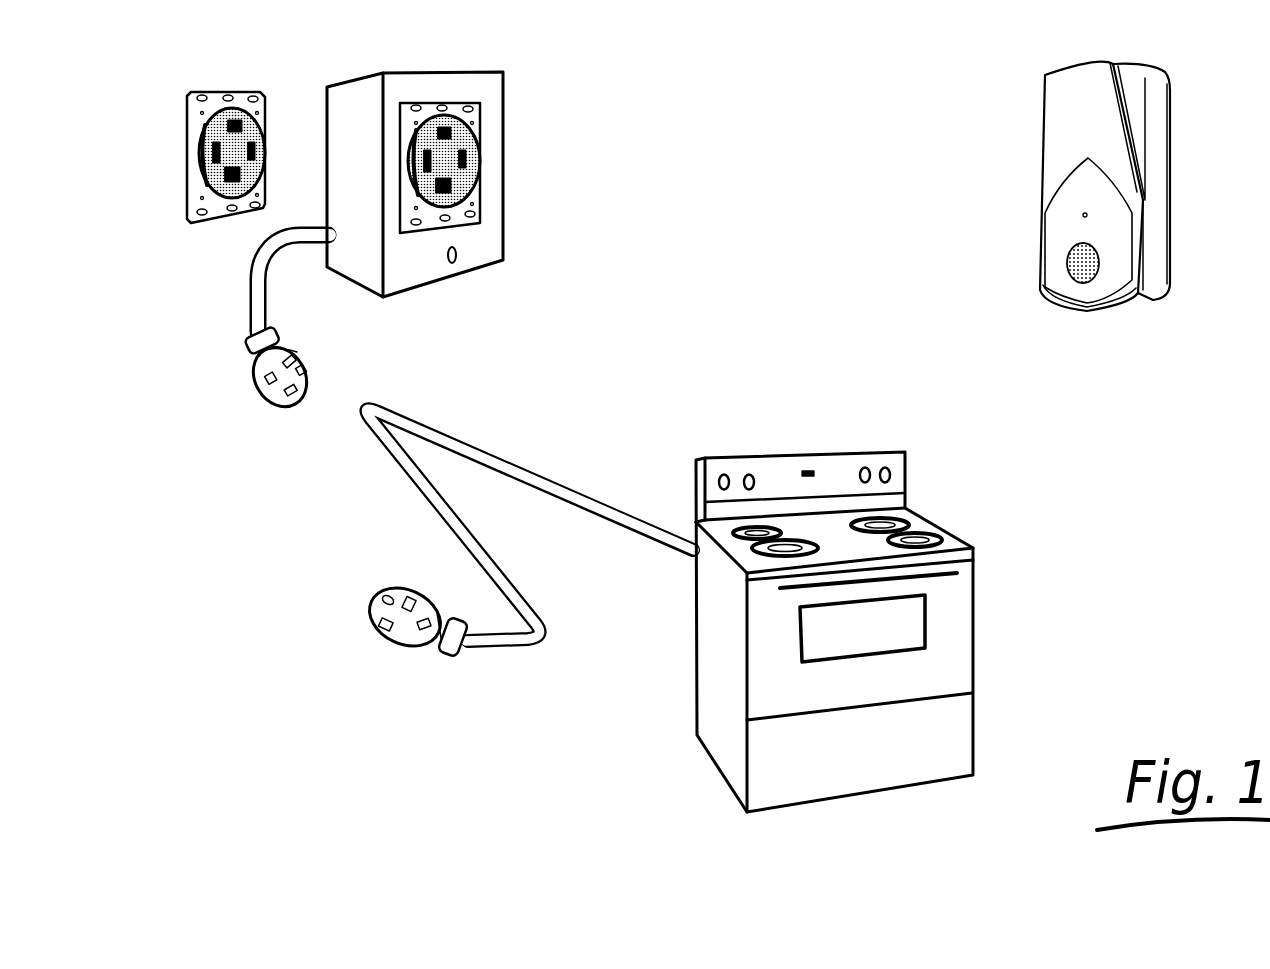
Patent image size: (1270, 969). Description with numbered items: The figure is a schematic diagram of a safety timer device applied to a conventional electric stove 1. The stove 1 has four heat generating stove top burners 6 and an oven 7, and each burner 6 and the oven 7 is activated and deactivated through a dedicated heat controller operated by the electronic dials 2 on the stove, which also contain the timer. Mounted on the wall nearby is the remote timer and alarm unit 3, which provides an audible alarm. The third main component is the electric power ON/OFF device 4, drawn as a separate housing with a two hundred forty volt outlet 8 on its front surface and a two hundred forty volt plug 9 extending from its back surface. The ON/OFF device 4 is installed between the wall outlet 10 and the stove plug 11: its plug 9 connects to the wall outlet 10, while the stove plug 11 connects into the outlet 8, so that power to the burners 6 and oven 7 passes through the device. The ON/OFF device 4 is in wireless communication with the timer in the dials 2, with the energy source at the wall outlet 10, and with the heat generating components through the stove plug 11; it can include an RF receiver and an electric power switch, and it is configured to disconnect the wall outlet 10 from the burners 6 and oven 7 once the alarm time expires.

The electric stove 1 is at (712, 763).
The electronic dials 2 is at (723, 475).
The remote timer and alarm unit 3 is at (1172, 162).
The electric power ON/OFF device 4 is at (503, 150).
The stove top burners 6 is at (912, 522).
The oven 7 is at (927, 623).
The 240V outlet 8 is at (478, 188).
The 240V plug 9 is at (272, 405).
The wall outlet 10 is at (237, 107).
The stove plug 11 is at (417, 650).